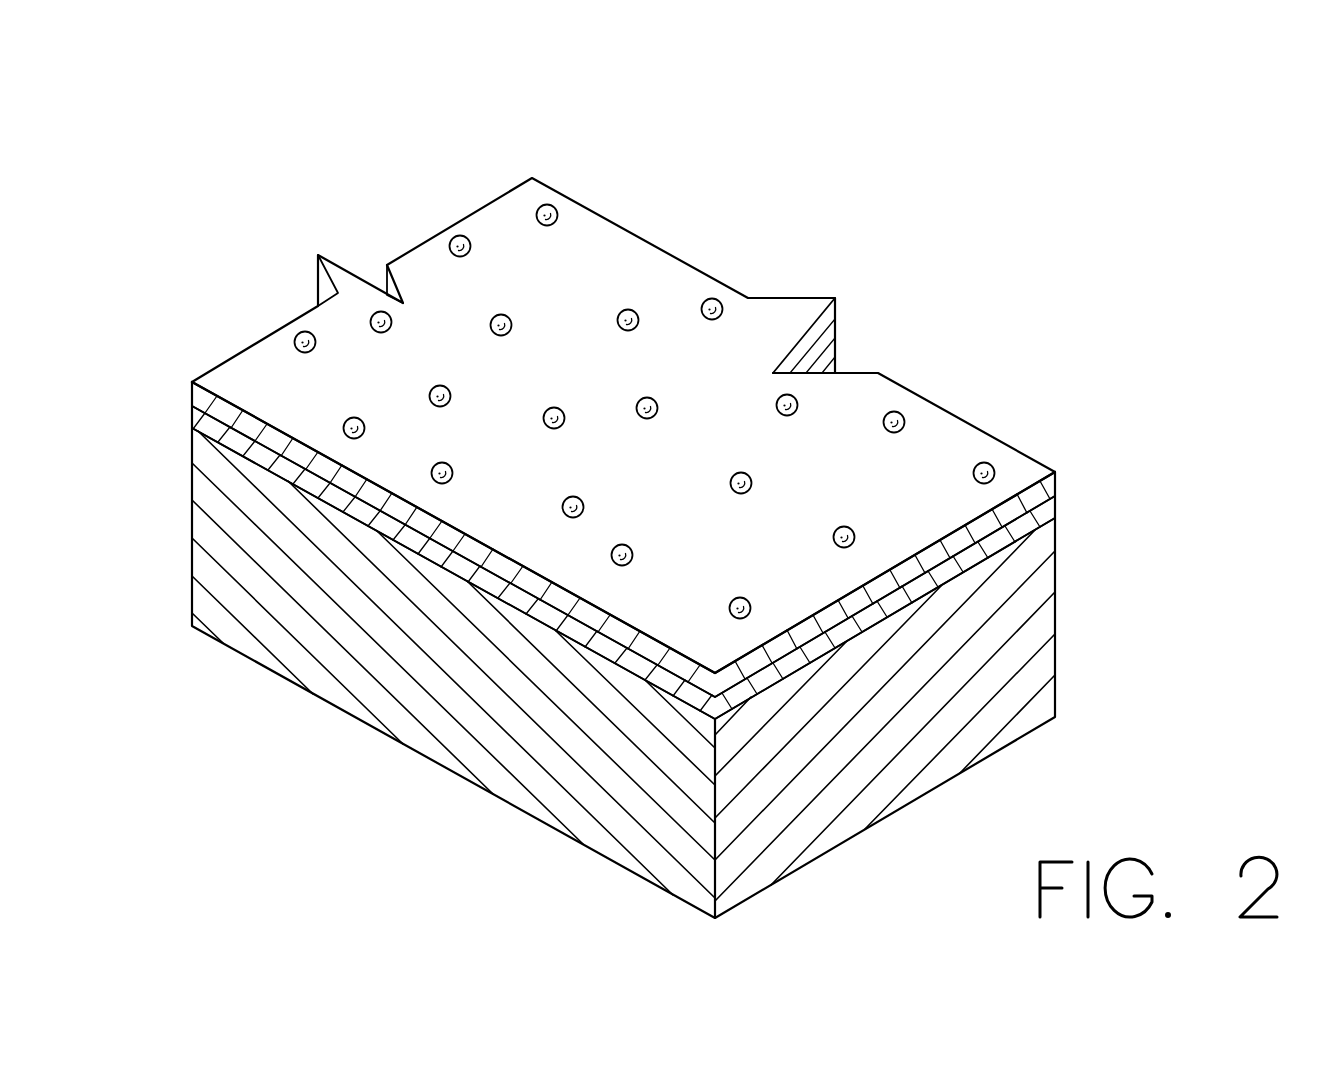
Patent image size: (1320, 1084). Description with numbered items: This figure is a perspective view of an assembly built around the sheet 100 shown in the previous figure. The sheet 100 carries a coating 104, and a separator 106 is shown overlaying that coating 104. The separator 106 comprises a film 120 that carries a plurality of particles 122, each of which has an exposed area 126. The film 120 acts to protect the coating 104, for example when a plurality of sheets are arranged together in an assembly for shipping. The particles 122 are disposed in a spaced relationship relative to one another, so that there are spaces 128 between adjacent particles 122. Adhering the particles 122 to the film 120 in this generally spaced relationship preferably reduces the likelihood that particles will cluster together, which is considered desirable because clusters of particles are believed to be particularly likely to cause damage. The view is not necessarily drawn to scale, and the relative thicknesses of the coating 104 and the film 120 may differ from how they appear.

The sheet 100 is at (1103, 628).
The coating 104 is at (1053, 505).
The separator 106 is at (1087, 462).
The film 120 is at (192, 392).
The particles 122 is at (549, 205).
The exposed area 126 is at (460, 232).
The spaces 128 is at (854, 156).